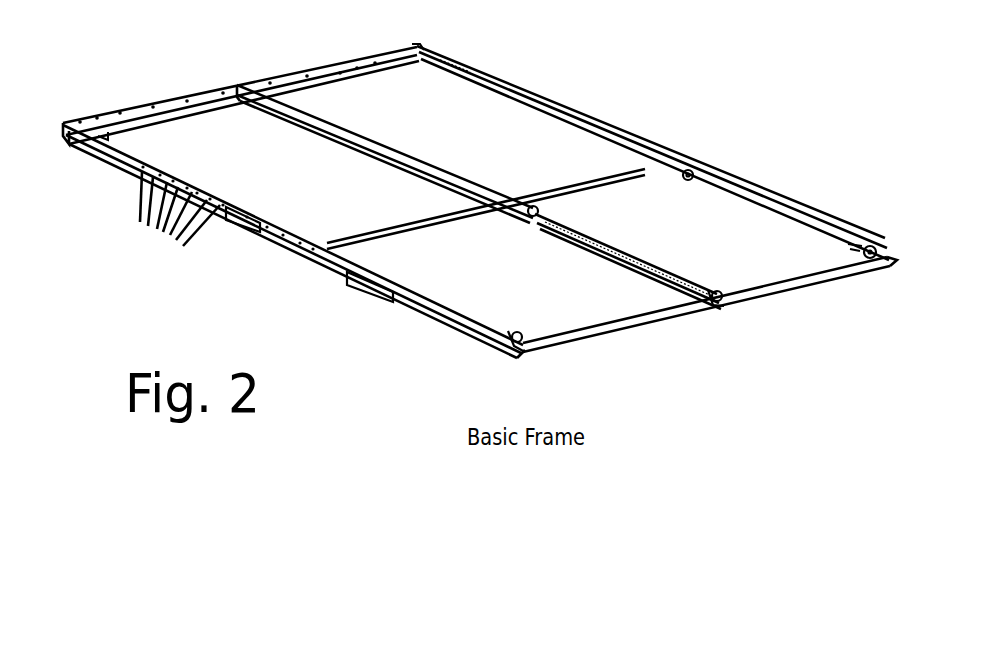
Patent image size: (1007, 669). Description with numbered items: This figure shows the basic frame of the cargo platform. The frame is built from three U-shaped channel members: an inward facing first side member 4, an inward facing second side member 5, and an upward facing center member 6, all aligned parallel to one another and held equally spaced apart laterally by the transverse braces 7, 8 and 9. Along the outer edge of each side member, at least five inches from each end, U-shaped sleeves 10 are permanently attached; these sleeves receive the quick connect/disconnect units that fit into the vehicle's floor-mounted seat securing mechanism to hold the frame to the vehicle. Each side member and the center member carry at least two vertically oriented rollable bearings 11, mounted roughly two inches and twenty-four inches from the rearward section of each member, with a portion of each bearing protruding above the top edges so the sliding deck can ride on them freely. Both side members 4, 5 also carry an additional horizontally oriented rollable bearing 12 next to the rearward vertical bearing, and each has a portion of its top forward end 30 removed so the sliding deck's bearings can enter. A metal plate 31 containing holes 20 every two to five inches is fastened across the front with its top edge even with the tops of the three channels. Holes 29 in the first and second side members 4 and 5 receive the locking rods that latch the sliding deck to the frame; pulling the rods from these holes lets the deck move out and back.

The first side member 4 is at (102, 152).
The second side member 5 is at (583, 107).
The center member 6 is at (601, 226).
The transverse brace 7 is at (796, 296).
The transverse brace 8 is at (410, 238).
The transverse brace 9 is at (170, 122).
The U-shaped sleeve 10 is at (346, 287).
The vertically oriented rollable bearing 11 is at (705, 177).
The horizontally oriented rollable bearing 12 is at (848, 247).
The holes 20 is at (341, 75).
The holes 29 is at (177, 220).
The top forward end 30 is at (417, 47).
The metal plate 31 is at (98, 115).